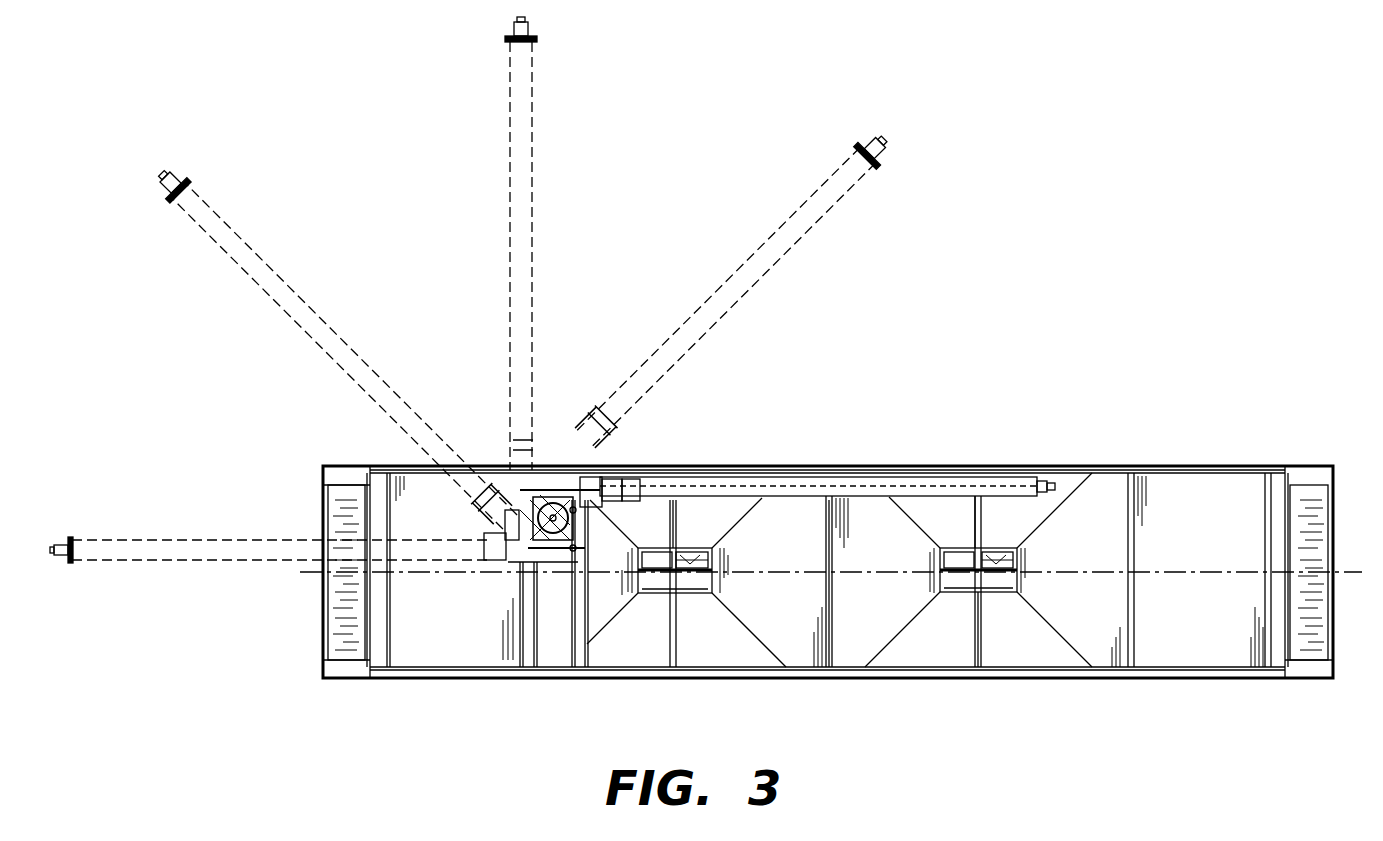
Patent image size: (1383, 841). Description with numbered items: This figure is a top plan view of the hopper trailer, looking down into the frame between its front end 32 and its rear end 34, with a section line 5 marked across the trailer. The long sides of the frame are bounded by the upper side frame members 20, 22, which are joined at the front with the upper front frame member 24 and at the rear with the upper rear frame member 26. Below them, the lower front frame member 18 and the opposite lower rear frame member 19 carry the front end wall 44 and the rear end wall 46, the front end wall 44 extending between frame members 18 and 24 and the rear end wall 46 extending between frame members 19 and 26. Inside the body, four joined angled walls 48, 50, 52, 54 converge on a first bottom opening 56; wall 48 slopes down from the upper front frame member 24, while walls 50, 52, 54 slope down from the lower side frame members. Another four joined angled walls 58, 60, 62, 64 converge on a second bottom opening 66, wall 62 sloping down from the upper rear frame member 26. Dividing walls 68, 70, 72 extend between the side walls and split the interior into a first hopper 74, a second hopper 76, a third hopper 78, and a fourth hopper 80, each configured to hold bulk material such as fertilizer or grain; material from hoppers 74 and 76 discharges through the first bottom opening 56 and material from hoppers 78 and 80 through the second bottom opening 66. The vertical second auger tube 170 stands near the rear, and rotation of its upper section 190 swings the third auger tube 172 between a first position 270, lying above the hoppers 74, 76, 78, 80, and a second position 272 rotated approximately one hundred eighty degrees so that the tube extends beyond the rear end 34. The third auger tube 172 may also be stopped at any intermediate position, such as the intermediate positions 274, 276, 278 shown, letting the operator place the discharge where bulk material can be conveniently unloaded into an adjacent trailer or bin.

The section line 5- 5 is at (305, 572).
The lower front frame member 18 is at (1330, 640).
The lower rear frame member 19 is at (325, 618).
The upper side frame member 20 is at (1050, 672).
The upper side frame member 22 is at (1223, 467).
The upper front frame member 24 is at (1282, 483).
The upper rear frame member 26 is at (368, 492).
The front end 32 is at (1307, 690).
The rear end 34 is at (328, 495).
The front end wall 44 is at (1318, 545).
The rear end wall 46 is at (325, 640).
The angled wall 48 is at (1185, 488).
The angled wall 50 is at (1066, 483).
The angled wall 52 is at (925, 522).
The angled wall 54 is at (1007, 629).
The first bottom opening 56 is at (958, 547).
The angled wall 58 is at (805, 583).
The angled wall 60 is at (697, 524).
The angled wall 62 is at (426, 570).
The angled wall 64 is at (697, 583).
The second bottom opening 66 is at (660, 598).
The dividing wall 68 is at (978, 647).
The dividing wall 70 is at (835, 648).
The dividing wall 72 is at (670, 512).
The first hopper 74 is at (1112, 497).
The second hopper 76 is at (915, 643).
The third hopper 78 is at (795, 640).
The fourth hopper 80 is at (626, 646).
The second auger tube 170 is at (540, 480).
The third auger tube 172 is at (818, 485).
The upper section 190 is at (563, 560).
The first position 270 is at (903, 485).
The second position 272 is at (137, 538).
The intermediate position 274 is at (738, 292).
The intermediate position 276 is at (510, 113).
The intermediate position 278 is at (240, 238).